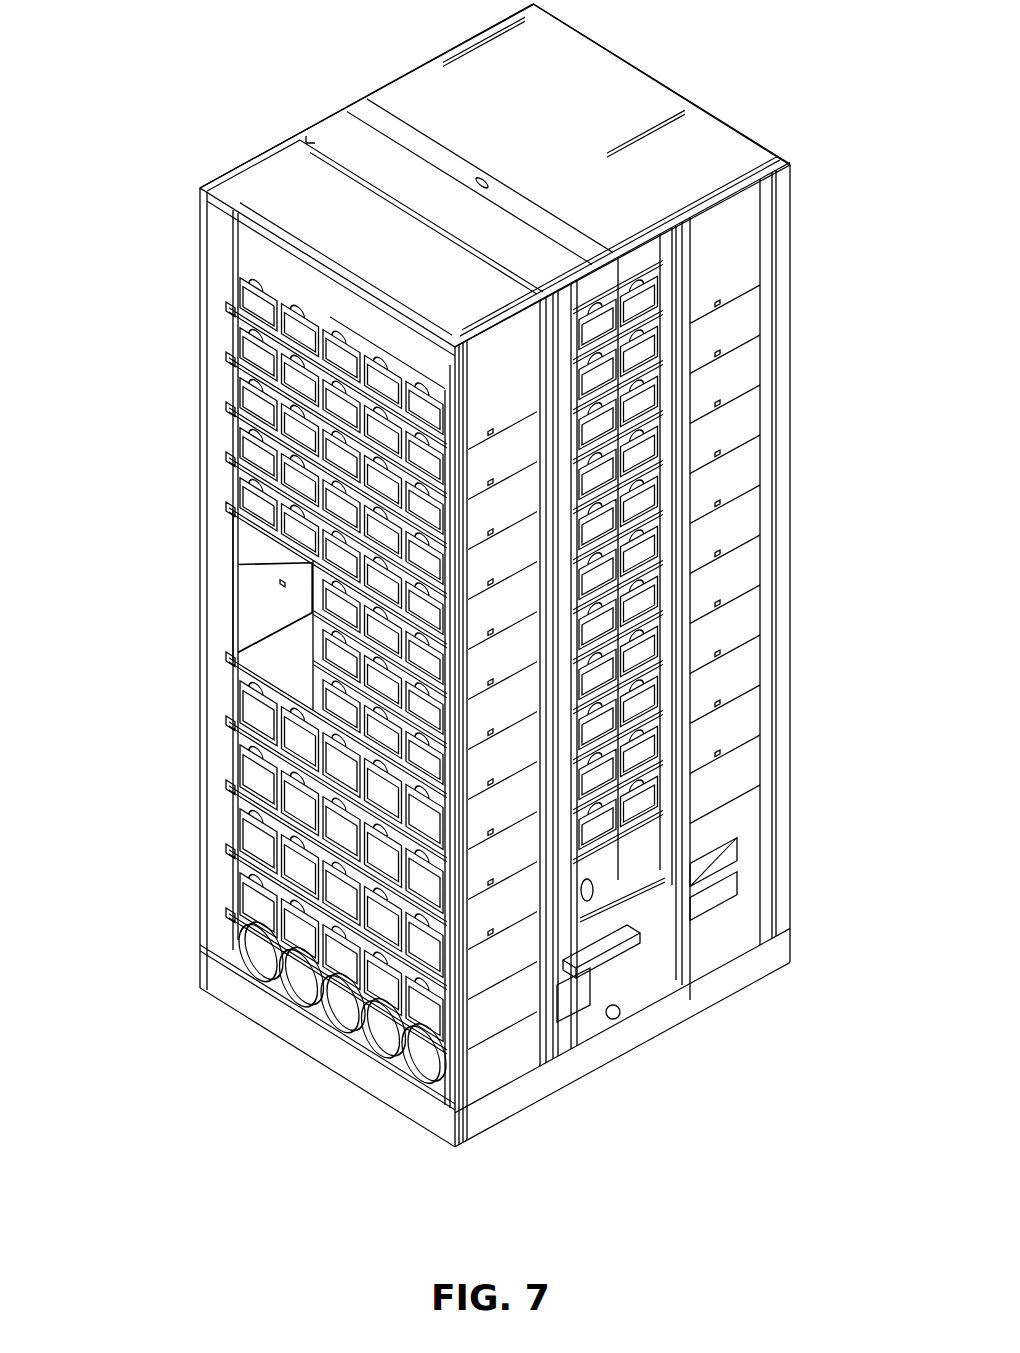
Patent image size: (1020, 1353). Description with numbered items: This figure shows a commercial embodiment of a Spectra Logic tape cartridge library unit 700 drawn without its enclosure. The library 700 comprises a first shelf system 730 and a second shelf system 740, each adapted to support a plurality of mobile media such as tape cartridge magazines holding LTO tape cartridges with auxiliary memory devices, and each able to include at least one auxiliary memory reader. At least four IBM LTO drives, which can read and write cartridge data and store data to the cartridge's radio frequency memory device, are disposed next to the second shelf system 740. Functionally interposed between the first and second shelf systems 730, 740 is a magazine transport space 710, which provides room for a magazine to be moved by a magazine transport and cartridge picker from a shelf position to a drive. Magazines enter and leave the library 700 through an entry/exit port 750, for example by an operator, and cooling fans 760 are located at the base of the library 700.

The T-950 library unit 700 is at (252, 105).
The magazine transport space 710 is at (636, 978).
The first shelf system 730 is at (178, 740).
The second shelf system 740 is at (812, 598).
The entry/exit port 750 is at (258, 615).
The cooling fans 760 is at (255, 1015).